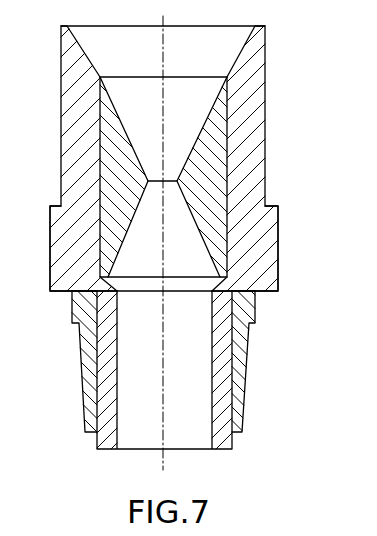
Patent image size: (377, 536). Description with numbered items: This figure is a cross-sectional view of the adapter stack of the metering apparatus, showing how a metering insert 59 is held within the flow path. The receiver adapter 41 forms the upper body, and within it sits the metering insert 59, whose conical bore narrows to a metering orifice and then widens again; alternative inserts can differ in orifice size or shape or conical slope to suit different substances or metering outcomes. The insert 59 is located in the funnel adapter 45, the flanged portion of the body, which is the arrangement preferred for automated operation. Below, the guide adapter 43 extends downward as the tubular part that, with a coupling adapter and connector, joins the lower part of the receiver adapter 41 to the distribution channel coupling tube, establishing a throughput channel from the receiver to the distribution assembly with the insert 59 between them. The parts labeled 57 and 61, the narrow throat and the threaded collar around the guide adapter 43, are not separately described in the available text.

The receiver adapter 41 is at (265, 151).
The guide adapter 43 is at (250, 305).
The funnel adapter 45 is at (258, 256).
The throat orifice 57 is at (169, 181).
The metering insert 59 is at (193, 215).
The nut 61 is at (100, 292).